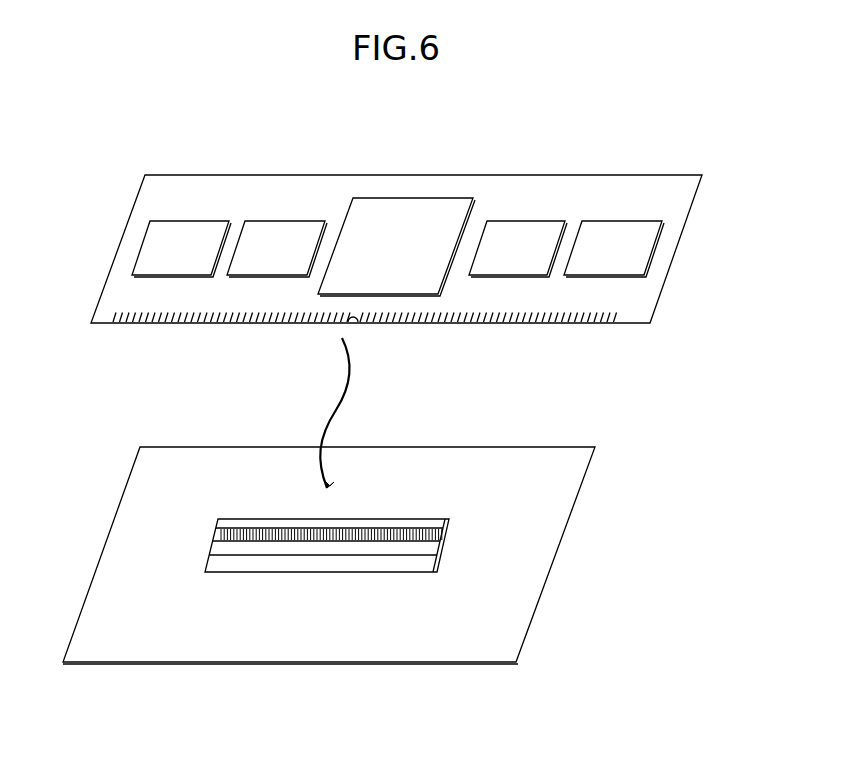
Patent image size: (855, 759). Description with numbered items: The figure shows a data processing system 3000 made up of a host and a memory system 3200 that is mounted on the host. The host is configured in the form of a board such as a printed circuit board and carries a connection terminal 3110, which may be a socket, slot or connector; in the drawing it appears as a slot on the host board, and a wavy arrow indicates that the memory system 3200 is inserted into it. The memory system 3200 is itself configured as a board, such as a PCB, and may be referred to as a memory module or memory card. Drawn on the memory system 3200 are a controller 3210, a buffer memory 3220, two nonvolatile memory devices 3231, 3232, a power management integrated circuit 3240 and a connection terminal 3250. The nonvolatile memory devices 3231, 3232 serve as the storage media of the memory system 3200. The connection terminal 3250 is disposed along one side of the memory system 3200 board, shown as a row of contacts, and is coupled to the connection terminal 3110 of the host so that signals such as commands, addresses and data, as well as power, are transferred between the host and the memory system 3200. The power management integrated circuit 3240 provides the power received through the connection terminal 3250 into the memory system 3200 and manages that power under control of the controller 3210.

The data processing system 3000 is at (165, 141).
The memory system 3200 is at (684, 175).
The controller 3210 is at (454, 198).
The buffer memory 3220 is at (277, 249).
The nonvolatile memory device 3231 is at (518, 249).
The nonvolatile memory device 3232 is at (614, 249).
The power management integrated circuit 3240 is at (181, 249).
The connection terminal 3250 is at (127, 324).
The connection terminal 3110 is at (449, 521).